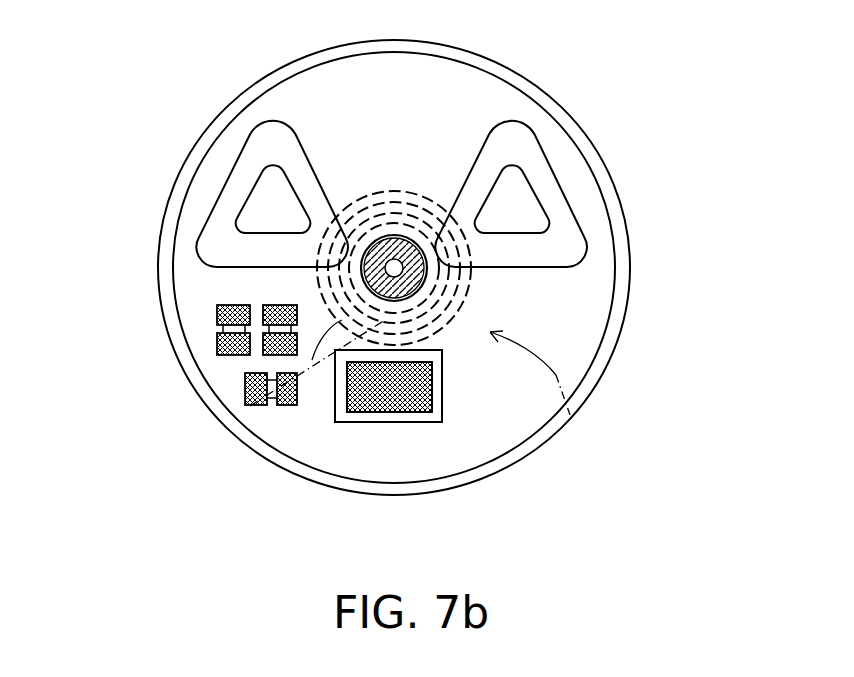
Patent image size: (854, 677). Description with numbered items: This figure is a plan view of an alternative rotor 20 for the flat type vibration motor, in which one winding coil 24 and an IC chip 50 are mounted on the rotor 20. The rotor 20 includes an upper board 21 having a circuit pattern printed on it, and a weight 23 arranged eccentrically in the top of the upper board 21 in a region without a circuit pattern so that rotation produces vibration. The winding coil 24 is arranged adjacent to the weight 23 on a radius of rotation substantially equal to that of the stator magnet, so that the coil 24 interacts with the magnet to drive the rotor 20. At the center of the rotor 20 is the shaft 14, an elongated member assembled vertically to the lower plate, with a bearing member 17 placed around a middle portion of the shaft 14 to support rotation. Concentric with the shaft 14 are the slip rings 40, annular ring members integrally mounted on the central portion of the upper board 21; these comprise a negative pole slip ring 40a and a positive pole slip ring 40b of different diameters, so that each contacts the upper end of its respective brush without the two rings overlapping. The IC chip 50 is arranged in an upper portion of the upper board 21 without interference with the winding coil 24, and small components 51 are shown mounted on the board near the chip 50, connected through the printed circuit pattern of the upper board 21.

The rotor 20 is at (409, 291).
The upper board 21 is at (478, 448).
The weight 23 is at (610, 183).
The winding coil 24 is at (220, 193).
The shaft 14 is at (397, 268).
The bearing member 17 is at (570, 415).
The slip rings 40 is at (410, 283).
The negative pole slip ring 40a is at (312, 360).
The positive pole slip ring 40b is at (247, 407).
The IC chip 50 is at (370, 412).
The electronic components 51 is at (247, 403).